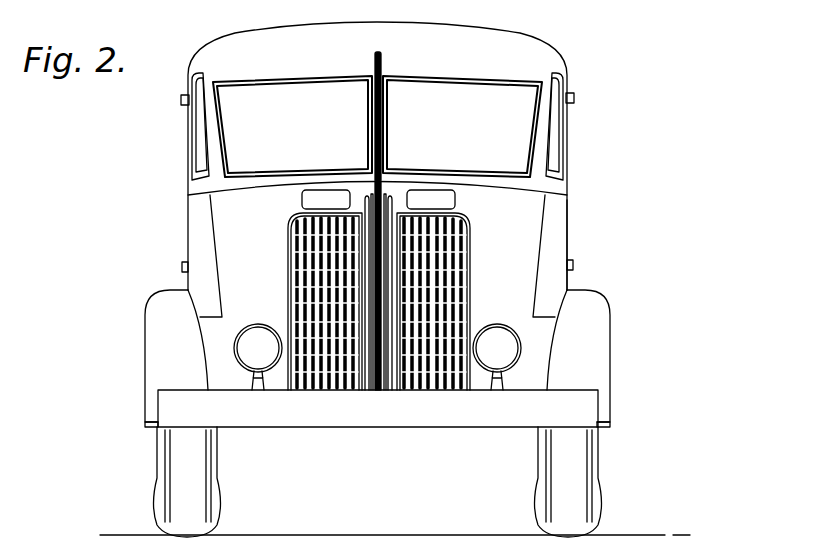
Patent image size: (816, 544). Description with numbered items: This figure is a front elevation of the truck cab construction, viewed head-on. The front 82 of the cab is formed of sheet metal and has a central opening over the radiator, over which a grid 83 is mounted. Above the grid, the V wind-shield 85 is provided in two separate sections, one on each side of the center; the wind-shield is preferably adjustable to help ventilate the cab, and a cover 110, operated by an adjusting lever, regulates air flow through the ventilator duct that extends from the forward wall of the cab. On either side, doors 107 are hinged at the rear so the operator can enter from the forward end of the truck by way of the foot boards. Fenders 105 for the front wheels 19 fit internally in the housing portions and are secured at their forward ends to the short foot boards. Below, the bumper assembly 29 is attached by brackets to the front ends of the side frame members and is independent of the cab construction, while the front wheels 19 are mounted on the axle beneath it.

The front wheels 19 is at (172, 468).
The bumper assembly 29 is at (358, 414).
The front of the cab 82 is at (510, 284).
The grid 83 is at (305, 249).
The V wind-shield 85 is at (377, 156).
The fenders 105 is at (160, 313).
The doors 107 is at (200, 232).
The cover 110 is at (443, 201).